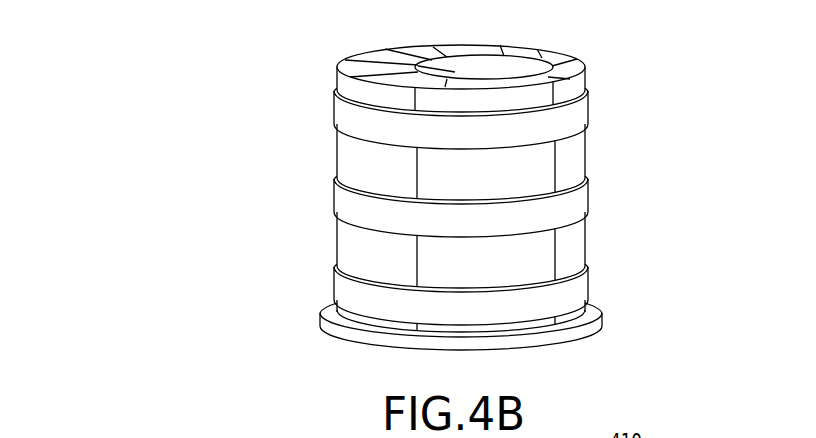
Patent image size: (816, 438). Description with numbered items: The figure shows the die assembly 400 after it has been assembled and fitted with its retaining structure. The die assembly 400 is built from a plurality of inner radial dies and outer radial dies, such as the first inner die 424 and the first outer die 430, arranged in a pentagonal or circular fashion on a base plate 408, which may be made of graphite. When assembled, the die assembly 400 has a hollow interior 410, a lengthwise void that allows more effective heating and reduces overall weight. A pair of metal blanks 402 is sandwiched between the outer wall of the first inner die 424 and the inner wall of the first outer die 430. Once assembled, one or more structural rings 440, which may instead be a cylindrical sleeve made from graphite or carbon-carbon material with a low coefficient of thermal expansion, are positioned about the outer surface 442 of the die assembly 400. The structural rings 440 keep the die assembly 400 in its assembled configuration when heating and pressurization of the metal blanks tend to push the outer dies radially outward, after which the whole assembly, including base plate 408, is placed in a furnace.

The die assembly 400 is at (130, 83).
The pair of metal blanks 402 is at (381, 73).
The base plate 408 is at (603, 317).
The hollow interior 410 is at (473, 61).
The first inner die 424 is at (411, 79).
The first outer die 430 is at (364, 73).
The structural rings 440 is at (588, 95).
The outer surface 442 is at (356, 246).